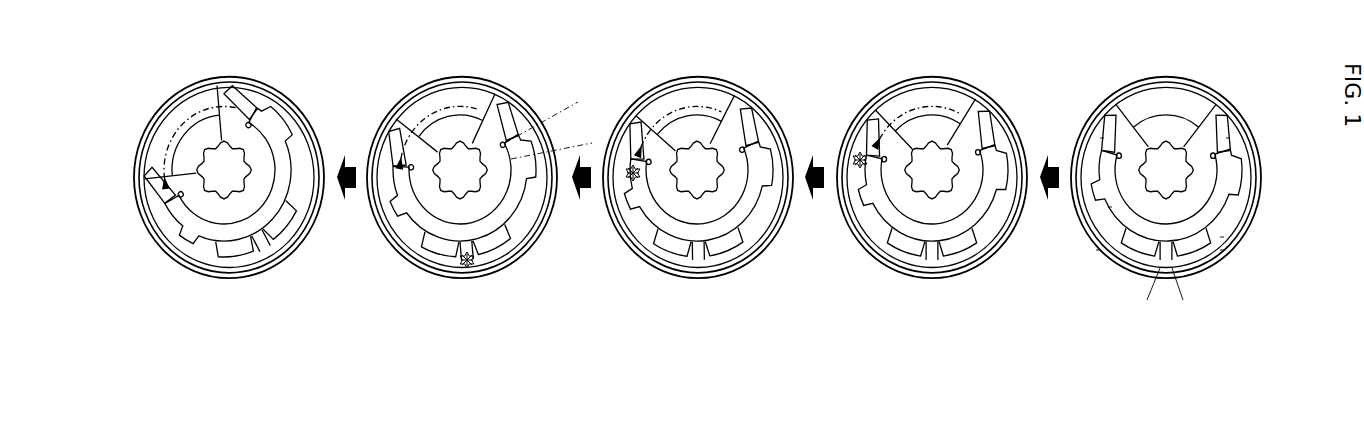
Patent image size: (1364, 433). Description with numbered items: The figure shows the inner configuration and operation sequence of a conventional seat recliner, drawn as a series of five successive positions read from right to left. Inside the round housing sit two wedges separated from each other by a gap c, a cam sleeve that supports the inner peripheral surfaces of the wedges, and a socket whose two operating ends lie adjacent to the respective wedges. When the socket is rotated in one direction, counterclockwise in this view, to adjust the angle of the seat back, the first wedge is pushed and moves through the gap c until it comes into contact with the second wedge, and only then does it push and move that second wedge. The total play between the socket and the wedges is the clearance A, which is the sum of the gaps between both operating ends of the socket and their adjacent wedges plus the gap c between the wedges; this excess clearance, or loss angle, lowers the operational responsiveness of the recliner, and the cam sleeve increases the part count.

The clearance A is at (589, 141).
The gap C is at (1200, 290).